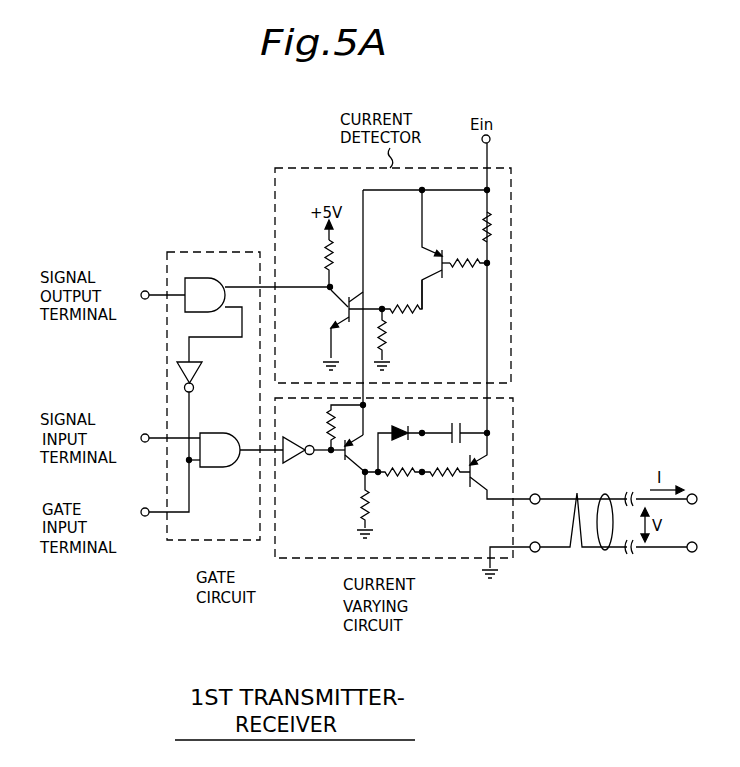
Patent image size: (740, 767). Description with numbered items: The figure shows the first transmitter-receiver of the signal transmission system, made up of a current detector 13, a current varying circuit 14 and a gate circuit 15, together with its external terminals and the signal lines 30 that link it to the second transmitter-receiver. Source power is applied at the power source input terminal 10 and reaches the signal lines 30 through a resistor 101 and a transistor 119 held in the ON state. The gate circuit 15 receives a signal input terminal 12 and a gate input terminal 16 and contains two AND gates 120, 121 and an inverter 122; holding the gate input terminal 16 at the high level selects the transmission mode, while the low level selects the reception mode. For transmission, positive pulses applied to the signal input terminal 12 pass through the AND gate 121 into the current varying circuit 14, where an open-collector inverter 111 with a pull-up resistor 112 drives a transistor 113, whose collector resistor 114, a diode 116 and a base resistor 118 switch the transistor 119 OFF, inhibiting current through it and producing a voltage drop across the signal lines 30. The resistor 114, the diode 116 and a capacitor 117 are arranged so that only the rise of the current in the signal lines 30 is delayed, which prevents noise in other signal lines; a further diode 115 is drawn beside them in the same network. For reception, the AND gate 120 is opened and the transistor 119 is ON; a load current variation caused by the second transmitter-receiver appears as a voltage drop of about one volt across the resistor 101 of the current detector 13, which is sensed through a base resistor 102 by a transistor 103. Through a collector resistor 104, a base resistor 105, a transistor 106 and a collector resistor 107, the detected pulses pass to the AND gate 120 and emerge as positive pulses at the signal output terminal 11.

The power source input terminal 10 is at (490, 140).
The signal output terminal 11 is at (161, 284).
The signal input terminal 12 is at (167, 428).
The current detector 13 is at (299, 168).
The current varying circuit 14 is at (305, 558).
The gate circuit 15 is at (212, 540).
The gate input terminal 16 is at (163, 454).
The signal lines 30 is at (606, 495).
The resistor 101 is at (473, 229).
The base resistor 102 is at (447, 270).
The transistor 103 is at (422, 266).
The collector resistor 104 is at (402, 305).
The base resistor 105 is at (392, 331).
The transistor 106 is at (336, 310).
The collector resistor 107 is at (325, 258).
The open-collector inverter 111 is at (300, 464).
The pull-up resistor 112 is at (326, 425).
The transistor 113 is at (338, 465).
The collector resistor 114 is at (350, 505).
The diode 115 is at (382, 426).
The diode 116 is at (387, 482).
The capacitor 117 is at (440, 427).
The base resistor 118 is at (430, 482).
The transistor 119 is at (473, 468).
The AND gate 120 is at (195, 284).
The AND gate 121 is at (200, 430).
The inverter 122 is at (196, 367).